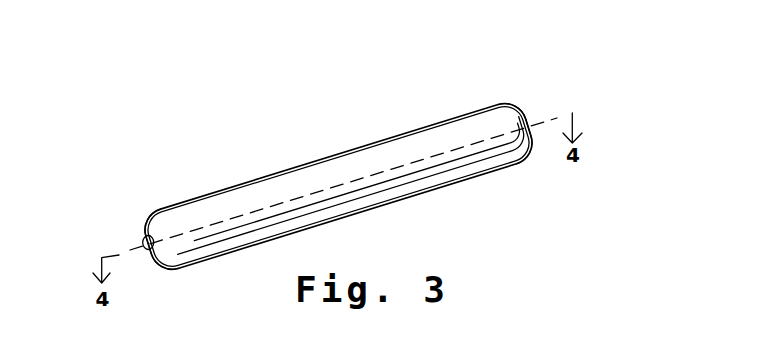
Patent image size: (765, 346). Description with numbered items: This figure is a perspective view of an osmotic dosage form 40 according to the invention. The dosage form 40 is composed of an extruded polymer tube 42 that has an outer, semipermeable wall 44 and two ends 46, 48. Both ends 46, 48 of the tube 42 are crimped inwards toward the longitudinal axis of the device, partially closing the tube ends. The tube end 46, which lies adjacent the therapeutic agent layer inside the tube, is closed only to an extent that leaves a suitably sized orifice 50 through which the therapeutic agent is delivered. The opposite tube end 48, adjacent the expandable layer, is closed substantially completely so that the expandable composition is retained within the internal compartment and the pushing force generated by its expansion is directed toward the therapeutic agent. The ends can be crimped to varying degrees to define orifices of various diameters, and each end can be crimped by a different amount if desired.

The osmotic dosage form 40 is at (461, 90).
The extruded polymer tube 42 is at (309, 152).
The semipermeable wall 44 is at (390, 152).
The tube end 46 is at (150, 212).
The tube end 48 is at (530, 118).
The orifice 50 is at (142, 239).